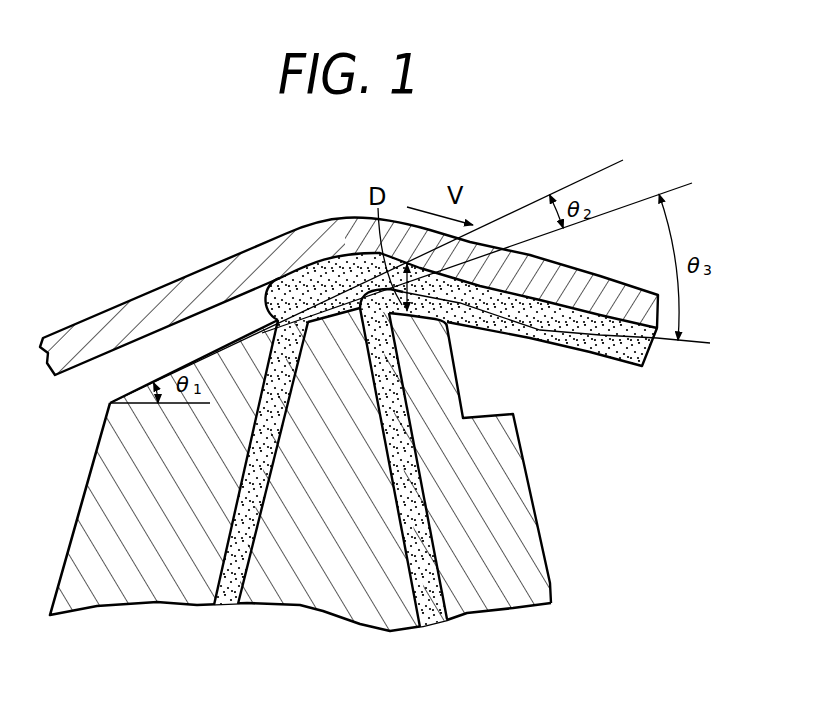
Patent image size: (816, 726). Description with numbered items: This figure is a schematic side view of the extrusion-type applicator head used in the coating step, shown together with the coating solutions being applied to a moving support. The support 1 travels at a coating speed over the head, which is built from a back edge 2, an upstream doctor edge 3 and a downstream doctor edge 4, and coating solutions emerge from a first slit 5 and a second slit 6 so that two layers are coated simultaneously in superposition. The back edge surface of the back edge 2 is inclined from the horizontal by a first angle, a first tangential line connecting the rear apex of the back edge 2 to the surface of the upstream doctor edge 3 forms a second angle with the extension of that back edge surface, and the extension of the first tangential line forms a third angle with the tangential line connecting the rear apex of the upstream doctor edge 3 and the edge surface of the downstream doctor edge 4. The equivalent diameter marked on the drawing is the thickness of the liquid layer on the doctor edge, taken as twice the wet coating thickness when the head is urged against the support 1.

The web (support) moving at velocity V 1 is at (147, 303).
The upstream die lip (back edge) 2 is at (130, 451).
The middle die lip 3 is at (330, 343).
The downstream die lip (front edge) 4 is at (430, 378).
The first coating slot 5 is at (262, 452).
The second coating slot 6 is at (390, 447).